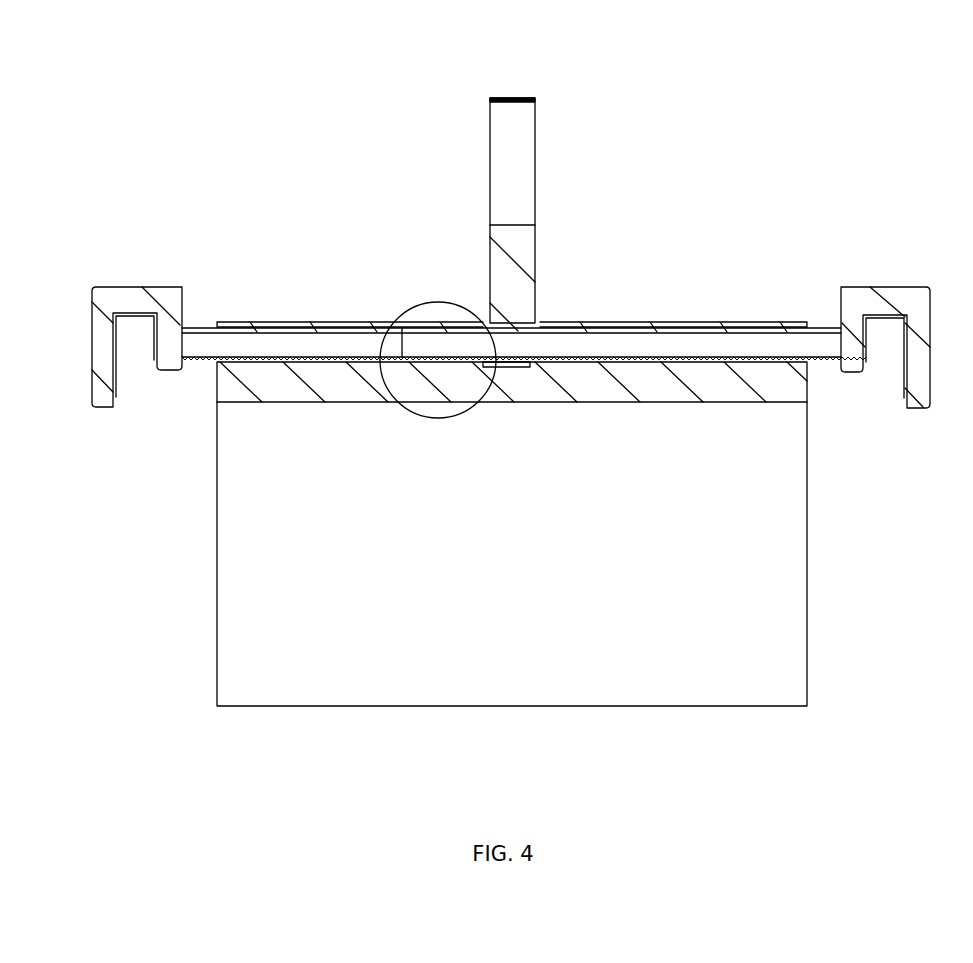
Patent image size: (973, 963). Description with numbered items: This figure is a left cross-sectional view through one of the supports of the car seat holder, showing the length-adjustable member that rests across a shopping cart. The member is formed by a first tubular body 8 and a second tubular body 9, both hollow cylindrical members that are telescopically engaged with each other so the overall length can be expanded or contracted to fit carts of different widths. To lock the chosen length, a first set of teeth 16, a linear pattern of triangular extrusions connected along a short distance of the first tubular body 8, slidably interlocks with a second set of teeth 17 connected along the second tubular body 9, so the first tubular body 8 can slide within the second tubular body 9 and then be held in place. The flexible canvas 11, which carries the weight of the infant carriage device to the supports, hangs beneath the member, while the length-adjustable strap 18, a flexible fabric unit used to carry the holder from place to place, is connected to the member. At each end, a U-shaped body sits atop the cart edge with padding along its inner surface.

The first tubular body 8 is at (277, 342).
The second tubular body 9 is at (740, 343).
The canvas 11 is at (521, 593).
The first set of teeth 16 is at (333, 370).
The second set of teeth 17 is at (440, 371).
The length-adjustable strap 18 is at (510, 74).